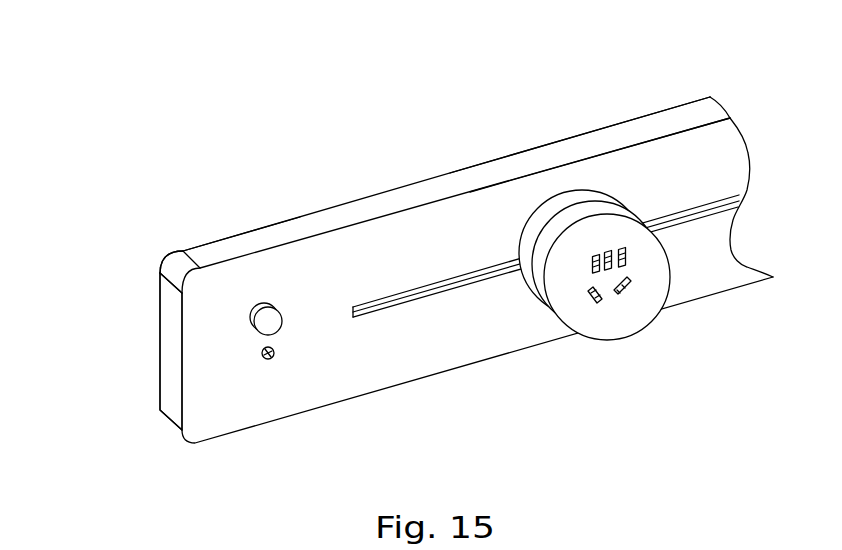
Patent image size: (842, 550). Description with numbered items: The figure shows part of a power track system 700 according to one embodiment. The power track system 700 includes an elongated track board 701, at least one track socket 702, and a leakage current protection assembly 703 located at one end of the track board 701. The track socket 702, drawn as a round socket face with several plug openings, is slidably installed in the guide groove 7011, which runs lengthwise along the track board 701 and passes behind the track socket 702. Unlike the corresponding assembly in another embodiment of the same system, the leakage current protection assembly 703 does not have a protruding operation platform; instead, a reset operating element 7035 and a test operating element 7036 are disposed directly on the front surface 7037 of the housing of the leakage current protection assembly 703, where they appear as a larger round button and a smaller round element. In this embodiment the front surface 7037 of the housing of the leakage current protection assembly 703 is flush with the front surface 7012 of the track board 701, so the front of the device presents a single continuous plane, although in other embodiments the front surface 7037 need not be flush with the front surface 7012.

The power track system 700 is at (793, 44).
The track board 701 is at (454, 177).
The guide groove 7011 is at (445, 269).
The front surface of the track board 7012 is at (638, 168).
The track socket 702 is at (636, 340).
The leakage current protection assembly 703 is at (230, 240).
The reset operating element 7035 is at (236, 318).
The test operating element 7036 is at (244, 359).
The front surface of the housing 7037 is at (183, 352).